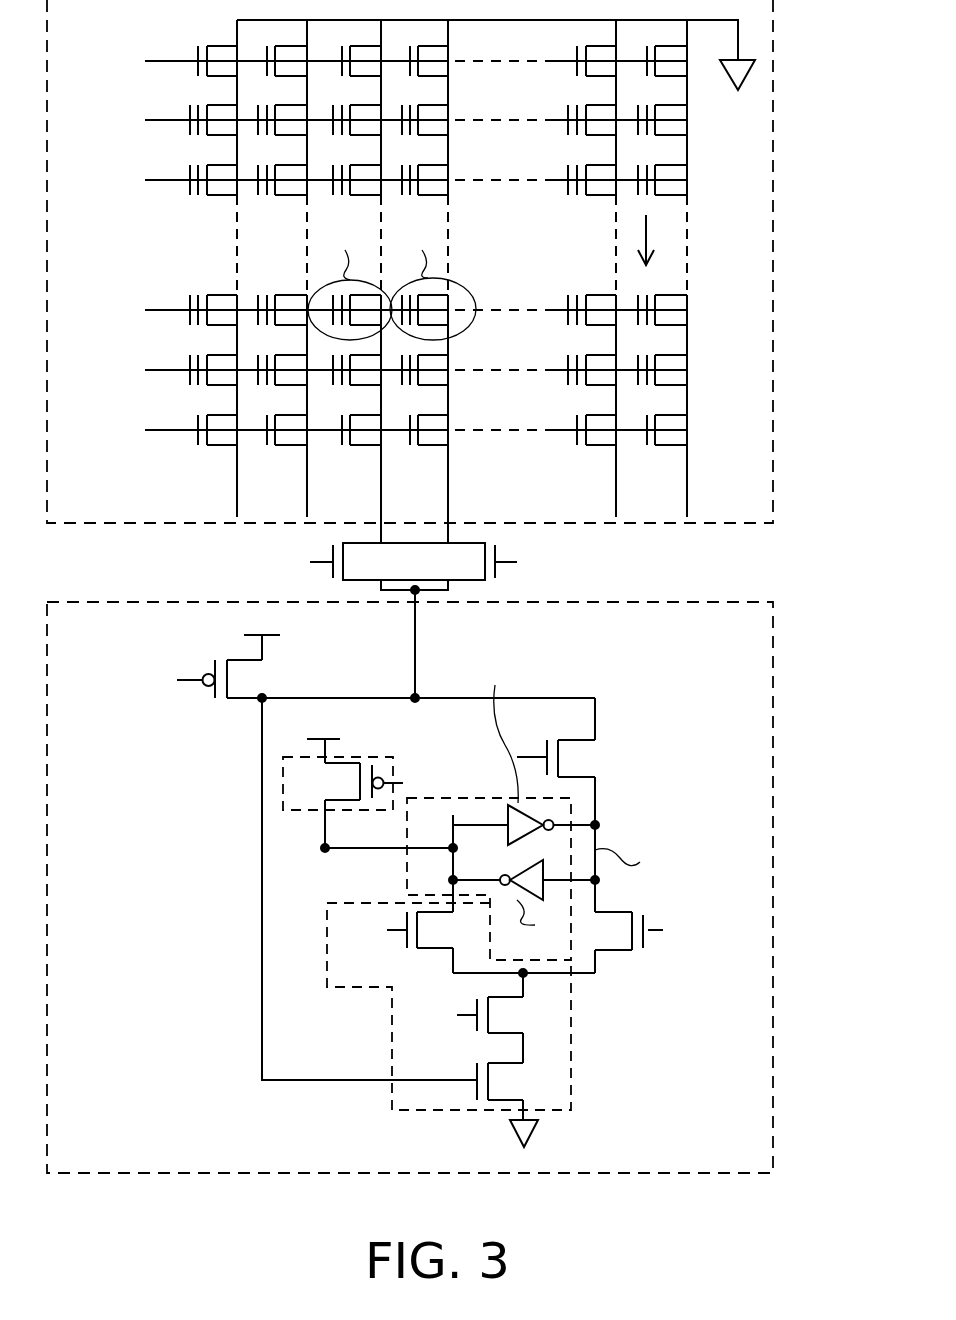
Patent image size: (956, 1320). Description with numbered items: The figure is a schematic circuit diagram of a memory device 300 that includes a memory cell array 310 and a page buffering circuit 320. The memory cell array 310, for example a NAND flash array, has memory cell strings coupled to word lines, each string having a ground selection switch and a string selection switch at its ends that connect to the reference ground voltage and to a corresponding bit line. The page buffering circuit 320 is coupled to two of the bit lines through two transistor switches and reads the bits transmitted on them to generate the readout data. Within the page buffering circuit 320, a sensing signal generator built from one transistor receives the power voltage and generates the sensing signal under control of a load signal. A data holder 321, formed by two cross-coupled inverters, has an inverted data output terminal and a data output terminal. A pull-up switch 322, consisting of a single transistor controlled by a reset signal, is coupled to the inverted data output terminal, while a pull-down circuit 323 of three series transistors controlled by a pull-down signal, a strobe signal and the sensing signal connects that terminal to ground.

The memory device 300 is at (468, 614).
The memory cell array 310 is at (773, 215).
The page buffering circuit 320 is at (468, 887).
The data holder 321 is at (572, 805).
The pull-up switch 322 is at (382, 757).
The pull-down circuit 323 is at (573, 1035).